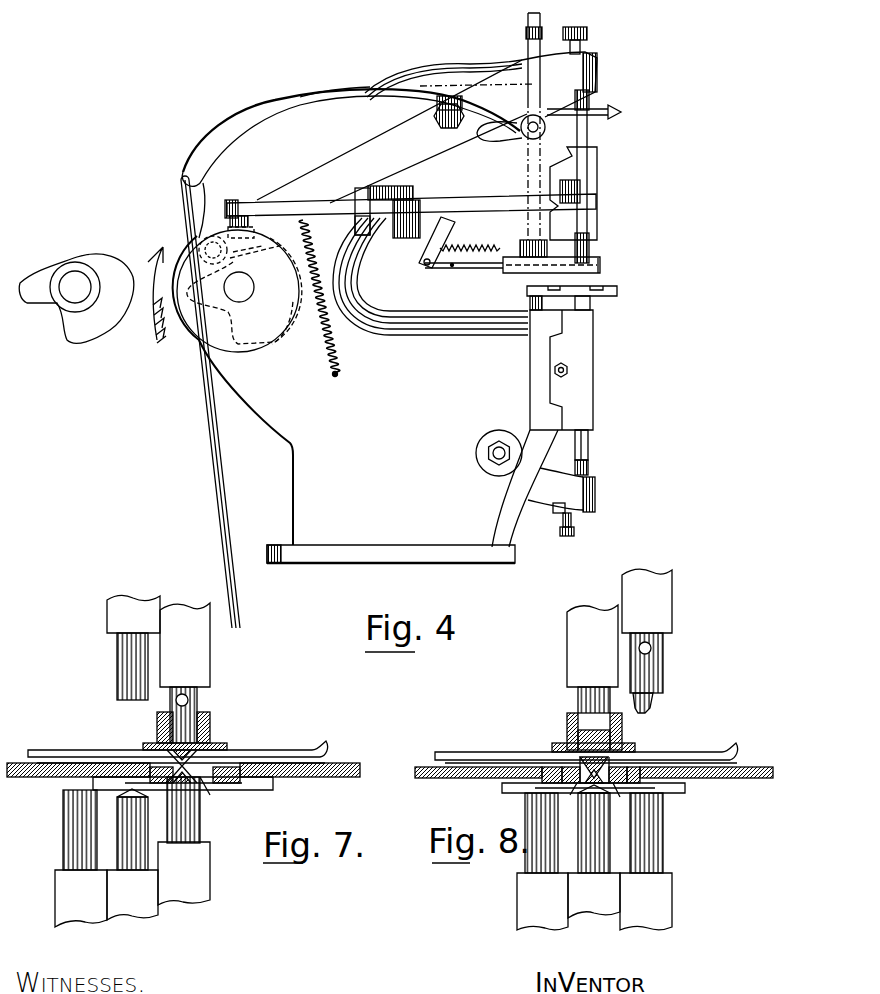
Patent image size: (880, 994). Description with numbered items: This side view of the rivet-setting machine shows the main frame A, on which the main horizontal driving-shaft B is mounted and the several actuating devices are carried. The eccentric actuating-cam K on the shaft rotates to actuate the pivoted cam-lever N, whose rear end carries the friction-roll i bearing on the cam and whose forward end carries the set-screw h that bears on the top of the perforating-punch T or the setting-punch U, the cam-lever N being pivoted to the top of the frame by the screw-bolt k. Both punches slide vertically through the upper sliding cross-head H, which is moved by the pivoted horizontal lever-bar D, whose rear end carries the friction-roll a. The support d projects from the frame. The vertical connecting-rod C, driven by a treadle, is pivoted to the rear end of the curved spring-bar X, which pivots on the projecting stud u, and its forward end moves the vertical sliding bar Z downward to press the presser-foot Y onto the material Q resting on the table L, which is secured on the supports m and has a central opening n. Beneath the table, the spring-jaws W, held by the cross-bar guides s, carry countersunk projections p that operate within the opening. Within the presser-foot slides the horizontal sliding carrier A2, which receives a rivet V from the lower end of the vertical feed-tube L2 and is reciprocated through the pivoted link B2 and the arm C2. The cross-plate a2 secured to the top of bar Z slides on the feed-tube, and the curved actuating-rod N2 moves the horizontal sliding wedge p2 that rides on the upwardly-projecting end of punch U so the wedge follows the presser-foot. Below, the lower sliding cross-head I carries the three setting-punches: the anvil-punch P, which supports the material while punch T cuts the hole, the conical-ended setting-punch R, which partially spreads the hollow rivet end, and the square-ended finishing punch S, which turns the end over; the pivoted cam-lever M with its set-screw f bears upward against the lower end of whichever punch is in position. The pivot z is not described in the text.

In FIG. 4, the main frame A is at (365, 326).
In FIG. 4, the curved spring-bar X is at (338, 96).
In FIG. 4, the cross-plate a2 is at (499, 133).
In FIG. 4, the curved actuating-rod N2 is at (497, 77).
In FIG. 4, the cam-lever N is at (427, 127).
In FIG. 4, the horizontal lever-bar D is at (492, 186).
In FIG. 4, the support d is at (369, 226).
In FIG. 4, the friction-roll a is at (250, 223).
In FIG. 4, the eccentric actuating-cam K is at (160, 291).
In FIG. 4, the main horizontal driving-shaft B is at (239, 287).
In FIG. 4, the friction-roll i is at (213, 250).
In FIG. 4, the vertical connecting-rod C is at (187, 206).
In FIG. 4, the projecting stud u is at (459, 101).
In FIG. 4, the screw-bolt k is at (438, 122).
In FIG. 4, the pivot z is at (545, 130).
In FIG. 4, the vertical feed-tube L2 is at (533, 136).
In FIG. 4, the set-screw h is at (583, 35).
In FIG. 4, the setting-punch U is at (590, 257).
In FIG. 7, the setting-punch U is at (133, 647).
In FIG. 8, the setting-punch U is at (592, 659).
In FIG. 4, the horizontal sliding wedge p2 is at (596, 111).
In FIG. 4, the upper sliding cross-head H is at (573, 193).
In FIG. 4, the arm C2 is at (428, 256).
In FIG. 4, the pivoted link B2 is at (441, 270).
In FIG. 4, the vertical sliding bar Z is at (477, 249).
In FIG. 4, the horizontal sliding carrier A2 is at (484, 270).
In FIG. 4, the presser-foot Y is at (600, 268).
In FIG. 7, the presser-foot Y is at (181, 731).
In FIG. 8, the presser-foot Y is at (567, 729).
In FIG. 4, the table L is at (579, 291).
In FIG. 7, the table L is at (18, 778).
In FIG. 8, the table L is at (400, 771).
In FIG. 4, the supports m is at (530, 300).
In FIG. 4, the setting or finishing punch S is at (591, 303).
In FIG. 7, the setting or finishing punch S is at (81, 858).
In FIG. 8, the setting or finishing punch S is at (542, 861).
In FIG. 4, the lower sliding cross-head I is at (561, 370).
In FIG. 4, the cam-lever M is at (561, 490).
In FIG. 4, the set-screw f is at (588, 470).
In FIG. 7, the perforating-punch T is at (185, 673).
In FIG. 8, the perforating-punch T is at (647, 641).
In FIG. 7, the material Q is at (184, 745).
In FIG. 8, the material Q is at (447, 757).
In FIG. 7, the countersunk projections p is at (150, 766).
In FIG. 8, the countersunk projections p is at (560, 769).
In FIG. 7, the central opening n is at (188, 774).
In FIG. 8, the central opening n is at (640, 768).
In FIG. 8, the rivet V is at (596, 770).
In FIG. 7, the spring-jaws W is at (205, 786).
In FIG. 8, the spring-jaws W is at (596, 804).
In FIG. 7, the cross-bar guides s is at (183, 785).
In FIG. 8, the cross-bar guides s is at (593, 789).
In FIG. 7, the setting-punch R is at (132, 854).
In FIG. 8, the setting-punch R is at (594, 851).
In FIG. 7, the anvil-punch P is at (184, 841).
In FIG. 8, the anvil-punch P is at (646, 861).